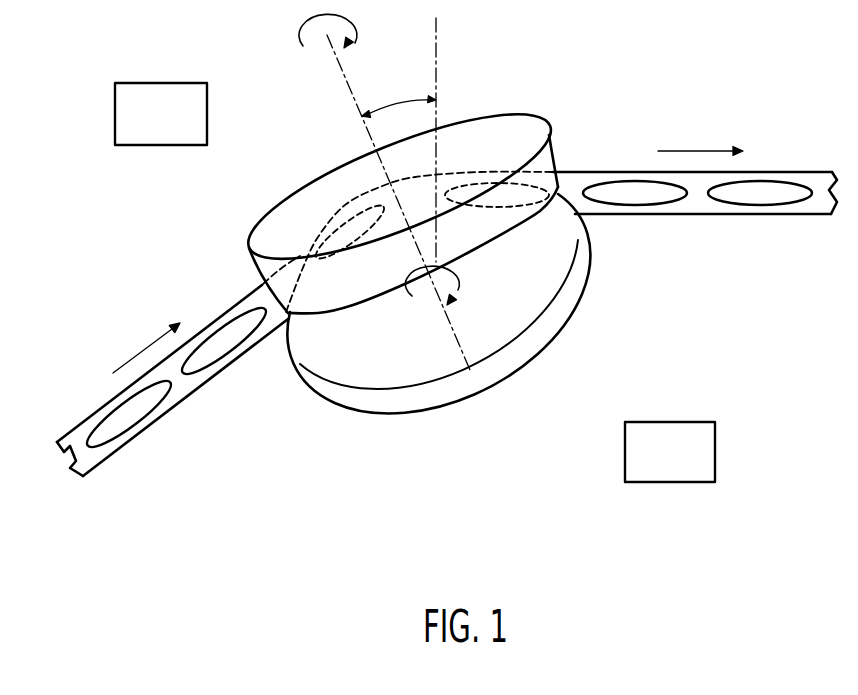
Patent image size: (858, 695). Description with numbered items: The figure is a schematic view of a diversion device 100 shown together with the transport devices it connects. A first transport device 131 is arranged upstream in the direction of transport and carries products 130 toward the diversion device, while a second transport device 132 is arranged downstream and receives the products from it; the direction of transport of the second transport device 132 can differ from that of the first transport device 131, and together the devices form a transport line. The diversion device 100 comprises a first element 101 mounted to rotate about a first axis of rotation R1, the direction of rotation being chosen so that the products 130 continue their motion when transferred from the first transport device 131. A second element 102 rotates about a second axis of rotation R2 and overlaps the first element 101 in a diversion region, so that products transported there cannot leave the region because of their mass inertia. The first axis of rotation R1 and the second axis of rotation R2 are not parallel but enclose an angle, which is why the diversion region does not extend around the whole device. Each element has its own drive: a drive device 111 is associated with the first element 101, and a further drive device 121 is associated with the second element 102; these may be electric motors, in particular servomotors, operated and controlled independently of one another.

The diversion device 100 is at (443, 309).
The first element 101 is at (584, 306).
The second element 102 is at (541, 136).
The drive device 111 is at (515, 378).
The drive device 121 is at (317, 198).
The products 130 is at (153, 400).
The first transport device 131 is at (117, 450).
The second transport device 132 is at (805, 171).
The first axis of rotation R1 is at (438, 235).
The second axis of rotation R2 is at (350, 82).